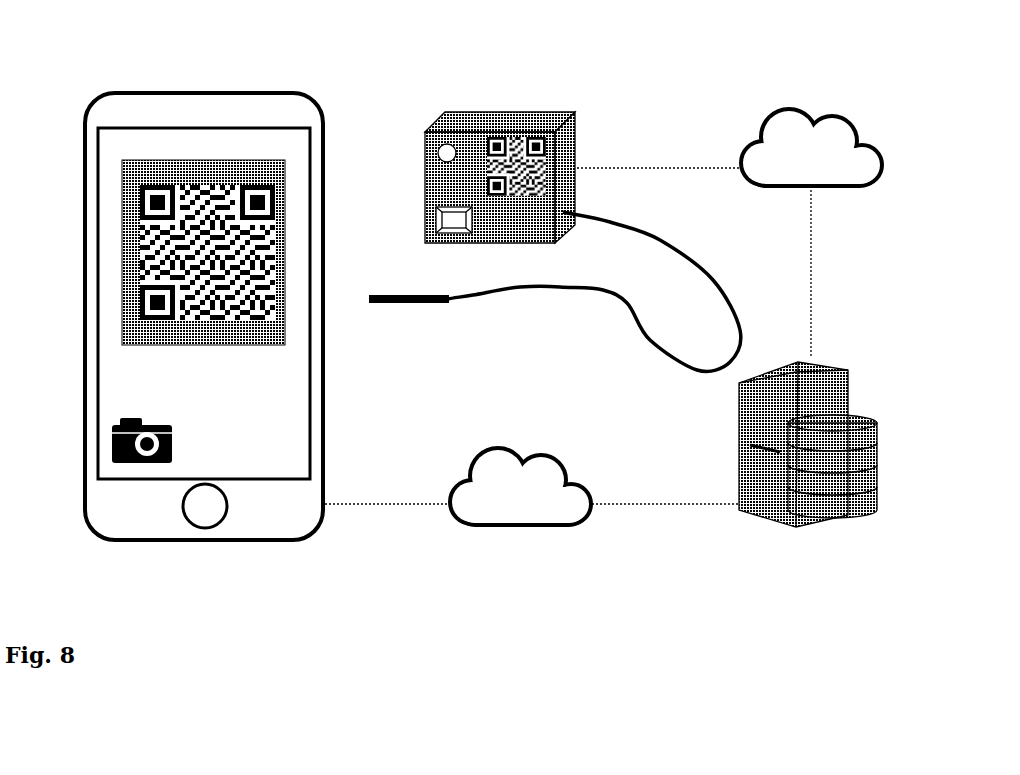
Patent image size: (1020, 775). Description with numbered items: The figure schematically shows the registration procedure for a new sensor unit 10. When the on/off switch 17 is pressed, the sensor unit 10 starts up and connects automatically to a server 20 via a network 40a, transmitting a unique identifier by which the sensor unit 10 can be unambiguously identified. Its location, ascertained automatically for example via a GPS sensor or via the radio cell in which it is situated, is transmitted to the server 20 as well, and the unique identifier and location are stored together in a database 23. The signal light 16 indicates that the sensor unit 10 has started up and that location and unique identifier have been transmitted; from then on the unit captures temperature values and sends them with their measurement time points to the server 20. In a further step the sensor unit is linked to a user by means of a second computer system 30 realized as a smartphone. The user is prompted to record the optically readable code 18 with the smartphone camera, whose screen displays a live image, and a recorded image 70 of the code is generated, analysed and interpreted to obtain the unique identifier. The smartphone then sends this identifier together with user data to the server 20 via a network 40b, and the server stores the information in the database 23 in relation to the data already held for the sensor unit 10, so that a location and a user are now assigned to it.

The sensor unit 10 is at (494, 103).
The signal light 16 is at (441, 147).
The on/off switch 17 is at (437, 222).
The optically readable code 18 is at (547, 160).
The server 20 is at (835, 393).
The database 23 is at (844, 503).
The second computer system 30 is at (88, 176).
The network 40a is at (811, 97).
The network 40b is at (517, 447).
The recorded image 70 is at (264, 168).